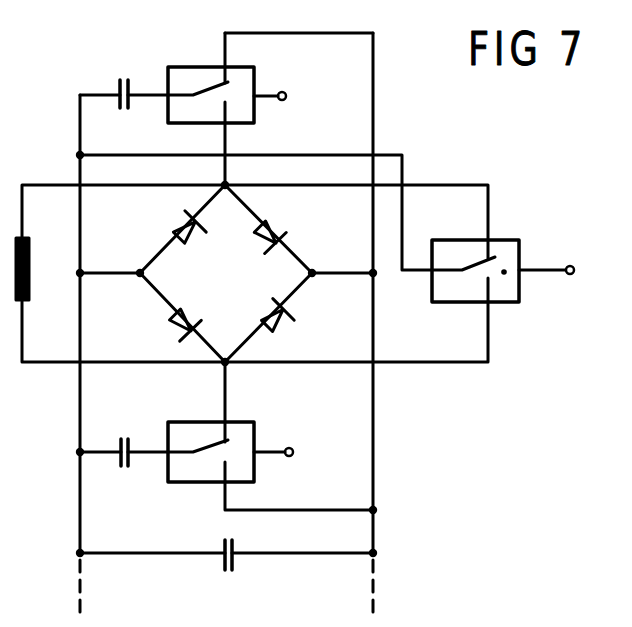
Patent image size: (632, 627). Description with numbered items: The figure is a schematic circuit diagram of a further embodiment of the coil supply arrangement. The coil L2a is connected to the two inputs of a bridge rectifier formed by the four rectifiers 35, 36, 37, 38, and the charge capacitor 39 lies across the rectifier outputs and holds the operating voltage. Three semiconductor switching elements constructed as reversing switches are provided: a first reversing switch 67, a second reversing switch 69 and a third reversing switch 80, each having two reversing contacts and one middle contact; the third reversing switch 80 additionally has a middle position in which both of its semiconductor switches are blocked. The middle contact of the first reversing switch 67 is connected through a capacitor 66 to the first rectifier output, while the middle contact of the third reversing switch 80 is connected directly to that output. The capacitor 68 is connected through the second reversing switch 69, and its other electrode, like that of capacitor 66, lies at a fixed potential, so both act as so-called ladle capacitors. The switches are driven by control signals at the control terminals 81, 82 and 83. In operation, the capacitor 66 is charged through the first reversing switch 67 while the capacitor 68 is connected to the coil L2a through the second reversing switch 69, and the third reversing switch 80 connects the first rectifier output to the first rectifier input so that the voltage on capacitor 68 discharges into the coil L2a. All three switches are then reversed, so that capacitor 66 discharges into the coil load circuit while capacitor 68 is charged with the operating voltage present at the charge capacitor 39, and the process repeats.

The coil L2a is at (28, 260).
The rectifier 35 is at (170, 226).
The rectifier 36 is at (277, 225).
The rectifier 37 is at (170, 318).
The rectifier 38 is at (284, 320).
The charge capacitor 39 is at (230, 579).
The capacitor 66 is at (124, 74).
The first reversing switch 67 is at (191, 66).
The capacitor 68 is at (124, 433).
The second reversing switch 69 is at (252, 430).
The third reversing switch 80 is at (515, 245).
The control terminal 81 is at (285, 96).
The control terminal 82 is at (565, 271).
The control terminal 83 is at (295, 455).